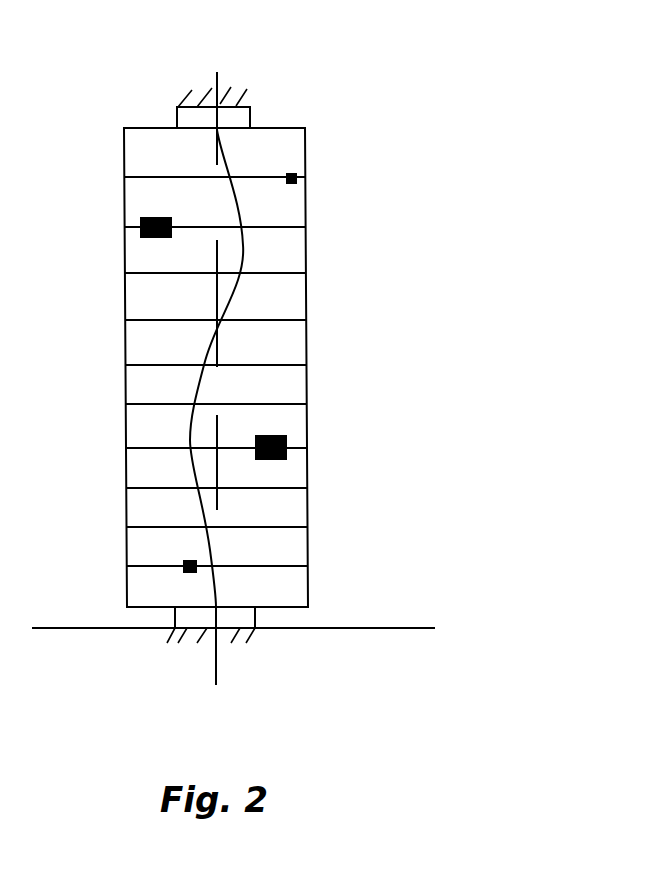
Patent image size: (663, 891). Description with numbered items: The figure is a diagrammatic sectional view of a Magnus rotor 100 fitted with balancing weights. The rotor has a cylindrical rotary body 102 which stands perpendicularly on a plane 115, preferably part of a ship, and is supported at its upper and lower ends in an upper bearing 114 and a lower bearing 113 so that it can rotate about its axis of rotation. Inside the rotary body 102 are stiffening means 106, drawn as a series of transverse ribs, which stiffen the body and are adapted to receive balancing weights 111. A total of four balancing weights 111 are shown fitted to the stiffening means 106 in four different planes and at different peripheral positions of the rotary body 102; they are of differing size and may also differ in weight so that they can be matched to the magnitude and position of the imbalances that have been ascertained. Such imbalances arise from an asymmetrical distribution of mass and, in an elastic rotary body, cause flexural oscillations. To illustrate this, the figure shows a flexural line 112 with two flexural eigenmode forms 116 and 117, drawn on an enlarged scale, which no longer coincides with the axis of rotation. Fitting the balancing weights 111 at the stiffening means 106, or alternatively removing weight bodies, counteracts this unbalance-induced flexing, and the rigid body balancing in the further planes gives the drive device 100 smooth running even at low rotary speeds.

The Magnus rotor 100 is at (484, 66).
The cylindrical rotary body 102 is at (305, 208).
The stiffening means 106 is at (153, 487).
The balancing weights 111 is at (298, 176).
The flexural line 112 is at (207, 517).
The lower bearing 113 is at (256, 640).
The upper bearing 114 is at (238, 105).
The plane 115 is at (429, 630).
The first flexural eigenmode form 116 is at (243, 242).
The second flexural eigenmode form 117 is at (190, 417).